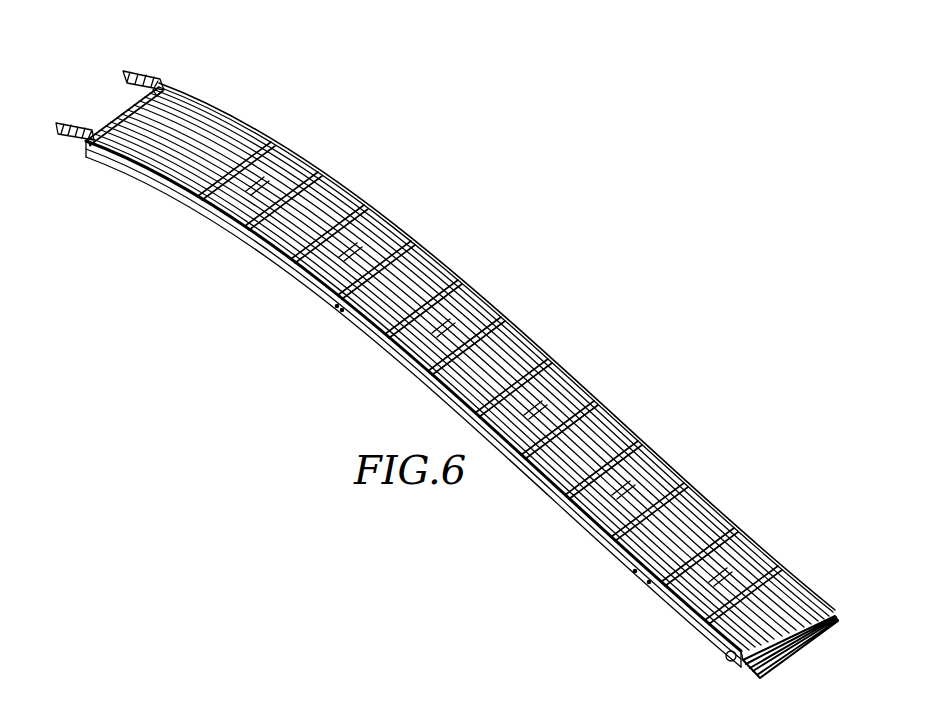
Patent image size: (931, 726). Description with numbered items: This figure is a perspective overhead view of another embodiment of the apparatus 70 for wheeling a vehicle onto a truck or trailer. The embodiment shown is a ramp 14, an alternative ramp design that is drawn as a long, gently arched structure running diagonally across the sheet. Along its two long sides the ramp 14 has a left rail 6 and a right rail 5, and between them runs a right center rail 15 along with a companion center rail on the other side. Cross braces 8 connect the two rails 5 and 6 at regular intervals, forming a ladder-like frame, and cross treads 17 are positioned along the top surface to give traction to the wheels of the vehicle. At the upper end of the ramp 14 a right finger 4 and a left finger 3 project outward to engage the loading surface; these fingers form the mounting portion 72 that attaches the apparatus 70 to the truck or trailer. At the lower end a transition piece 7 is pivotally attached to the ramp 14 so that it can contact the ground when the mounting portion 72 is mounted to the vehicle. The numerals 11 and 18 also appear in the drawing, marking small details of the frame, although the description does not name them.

The left finger 3 is at (75, 119).
The right finger 4 is at (140, 70).
The right rail 5 is at (613, 412).
The left rail 6 is at (188, 197).
The transition piece 7 is at (748, 667).
The cross braces 8 is at (537, 463).
The pin hole 11 is at (715, 647).
The ramp 14 is at (327, 303).
The right center rail 15 is at (312, 200).
The cross treads 17 is at (445, 270).
The cross brace 18 is at (418, 336).
The apparatus 70 is at (545, 285).
The mounting portion 72 is at (68, 142).